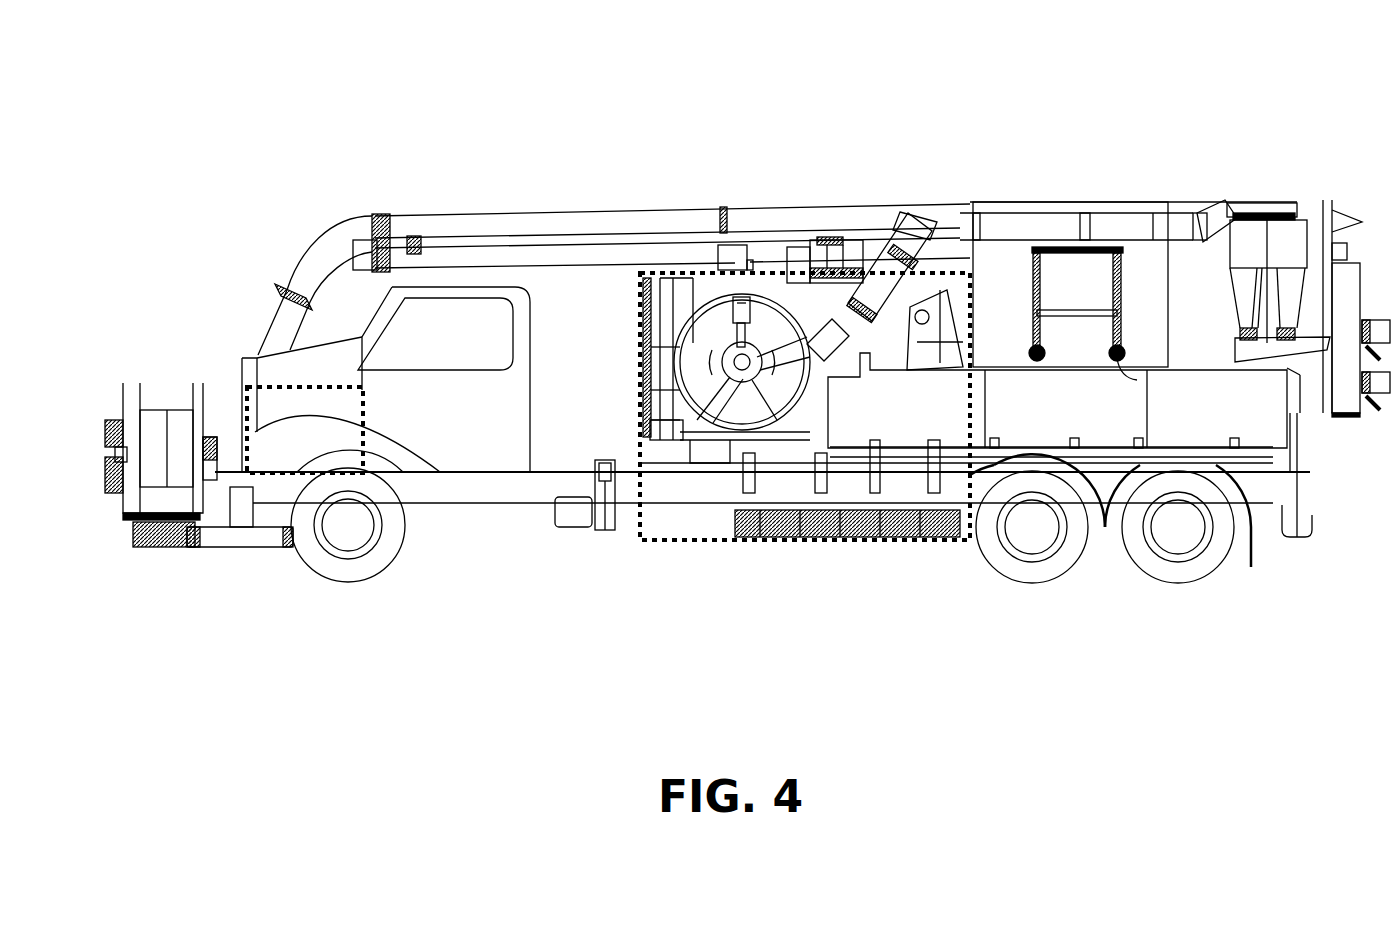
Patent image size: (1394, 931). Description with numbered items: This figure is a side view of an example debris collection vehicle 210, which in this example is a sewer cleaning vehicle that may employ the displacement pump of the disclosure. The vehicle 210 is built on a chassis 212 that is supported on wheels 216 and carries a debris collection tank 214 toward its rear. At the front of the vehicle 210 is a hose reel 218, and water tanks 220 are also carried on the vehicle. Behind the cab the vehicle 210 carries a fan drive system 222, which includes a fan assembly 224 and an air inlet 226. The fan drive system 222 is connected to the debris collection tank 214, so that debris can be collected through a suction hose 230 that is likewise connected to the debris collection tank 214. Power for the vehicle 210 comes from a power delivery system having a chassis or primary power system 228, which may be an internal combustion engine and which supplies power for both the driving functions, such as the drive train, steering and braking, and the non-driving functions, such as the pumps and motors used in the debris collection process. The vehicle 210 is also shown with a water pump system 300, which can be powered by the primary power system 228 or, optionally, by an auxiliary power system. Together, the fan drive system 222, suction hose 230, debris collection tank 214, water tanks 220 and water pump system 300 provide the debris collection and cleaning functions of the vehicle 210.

The debris collection vehicle 210 is at (203, 110).
The chassis 212 is at (497, 483).
The debris collection tank 214 is at (1200, 267).
The wheels 216 is at (343, 570).
The hose reel 218 is at (137, 390).
The water tanks 220 is at (1233, 407).
The fan drive system 222 is at (787, 265).
The fan assembly 224 is at (718, 323).
The air inlet 226 is at (743, 367).
The primary power system 228 is at (307, 475).
The suction hose 230 is at (409, 233).
The water pump system 300 is at (673, 253).